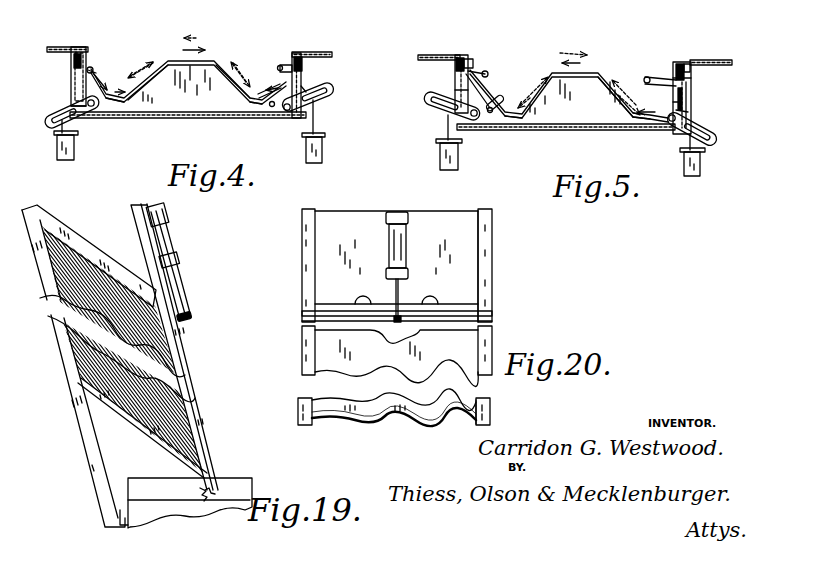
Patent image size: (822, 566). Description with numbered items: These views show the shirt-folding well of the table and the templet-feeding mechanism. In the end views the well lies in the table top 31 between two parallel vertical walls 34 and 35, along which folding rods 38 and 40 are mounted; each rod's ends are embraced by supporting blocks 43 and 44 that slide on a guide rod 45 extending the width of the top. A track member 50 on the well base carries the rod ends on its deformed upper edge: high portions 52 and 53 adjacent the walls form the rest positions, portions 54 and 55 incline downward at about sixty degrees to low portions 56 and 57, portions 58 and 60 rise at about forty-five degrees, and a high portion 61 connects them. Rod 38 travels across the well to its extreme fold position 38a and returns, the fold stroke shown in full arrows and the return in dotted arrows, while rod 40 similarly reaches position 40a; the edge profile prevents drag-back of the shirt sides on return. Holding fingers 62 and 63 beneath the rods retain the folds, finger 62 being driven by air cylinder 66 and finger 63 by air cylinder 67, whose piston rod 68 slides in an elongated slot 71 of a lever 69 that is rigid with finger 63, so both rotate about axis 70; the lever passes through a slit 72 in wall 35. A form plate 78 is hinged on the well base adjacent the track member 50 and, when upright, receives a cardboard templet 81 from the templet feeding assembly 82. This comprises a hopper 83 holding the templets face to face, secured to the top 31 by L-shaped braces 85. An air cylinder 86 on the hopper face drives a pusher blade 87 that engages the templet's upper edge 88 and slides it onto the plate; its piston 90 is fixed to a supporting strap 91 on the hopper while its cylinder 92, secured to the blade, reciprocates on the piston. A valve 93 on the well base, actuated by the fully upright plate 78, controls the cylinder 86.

In FIG. 4, the top 31 is at (52, 47).
In FIG. 5, the top 31 is at (732, 61).
In FIG. 19, the top 31 is at (245, 478).
In FIG. 4, the well wall 34 is at (70, 80).
In FIG. 5, the well wall 34 is at (445, 112).
In FIG. 4, the well wall 35 is at (302, 108).
In FIG. 5, the well wall 35 is at (690, 78).
In FIG. 4, the folding rod 38 is at (78, 48).
In FIG. 5, the folding rod 38 is at (456, 70).
In FIG. 4, the extreme forward fold position 38a is at (272, 108).
In FIG. 4, the folding rod 40 is at (300, 56).
In FIG. 5, the folding rod 40 is at (686, 64).
In FIG. 5, the extreme forward fold position 40a is at (490, 113).
In FIG. 4, the supporting block 43 is at (83, 47).
In FIG. 5, the supporting block 43 is at (462, 56).
In FIG. 5, the supporting block 44 is at (680, 60).
In FIG. 4, the guide rod 45 is at (92, 66).
In FIG. 5, the guide rod 45 is at (470, 68).
In FIG. 4, the track member 50 is at (171, 72).
In FIG. 5, the track member 50 is at (575, 113).
In FIG. 4, the edge portion 52 is at (88, 58).
In FIG. 5, the edge portion 52 is at (455, 92).
In FIG. 5, the edge portion 53 is at (690, 92).
In FIG. 4, the edge portion 54 is at (130, 66).
In FIG. 5, the edge portion 54 is at (483, 76).
In FIG. 4, the edge portion 55 is at (268, 85).
In FIG. 5, the edge portion 55 is at (650, 78).
In FIG. 4, the edge portion 56 is at (122, 104).
In FIG. 5, the edge portion 56 is at (505, 118).
In FIG. 4, the edge portion 57 is at (262, 108).
In FIG. 5, the edge portion 57 is at (628, 120).
In FIG. 4, the edge portion 58 is at (149, 78).
In FIG. 5, the edge portion 58 is at (536, 80).
In FIG. 4, the edge portion 60 is at (235, 92).
In FIG. 5, the edge portion 60 is at (607, 76).
In FIG. 4, the edge portion 61 is at (186, 40).
In FIG. 5, the edge portion 61 is at (600, 72).
In FIG. 4, the holding finger 62 is at (60, 108).
In FIG. 5, the holding finger 62 is at (500, 96).
In FIG. 4, the holding finger 63 is at (306, 88).
In FIG. 5, the holding finger 63 is at (688, 108).
In FIG. 4, the air cylinder 66 is at (78, 152).
In FIG. 5, the air cylinder 66 is at (438, 162).
In FIG. 4, the air cylinder 67 is at (323, 150).
In FIG. 5, the air cylinder 67 is at (700, 162).
In FIG. 4, the piston rod 68 is at (315, 126).
In FIG. 5, the piston rod 68 is at (684, 150).
In FIG. 4, the lever 69 is at (336, 93).
In FIG. 5, the lever 69 is at (713, 140).
In FIG. 4, the axis 70 is at (294, 115).
In FIG. 5, the axis 70 is at (666, 125).
In FIG. 4, the elongated slot 71 is at (337, 88).
In FIG. 5, the elongated slot 71 is at (702, 128).
In FIG. 5, the slit 72 is at (690, 102).
In FIG. 19, the form plate 78 is at (195, 367).
In FIG. 20, the form plate 78 is at (326, 352).
In FIG. 19, the cardboard templet 81 is at (167, 420).
In FIG. 20, the cardboard templet 81 is at (475, 311).
In FIG. 20, the templet feeding assembly 82 is at (498, 247).
In FIG. 19, the hopper 83 is at (84, 245).
In FIG. 20, the hopper 83 is at (492, 268).
In FIG. 19, the L-shaped brace 85 is at (78, 430).
In FIG. 20, the air cylinder 86 is at (410, 250).
In FIG. 19, the pusher blade 87 is at (218, 350).
In FIG. 20, the pusher blade 87 is at (330, 263).
In FIG. 19, the upper edge 88 is at (175, 300).
In FIG. 20, the upper edge 88 is at (432, 304).
In FIG. 19, the piston 90 is at (170, 287).
In FIG. 20, the piston 90 is at (400, 290).
In FIG. 19, the supporting strap 91 is at (186, 317).
In FIG. 20, the supporting strap 91 is at (313, 318).
In FIG. 19, the cylinder 92 is at (168, 212).
In FIG. 20, the cylinder 92 is at (388, 220).
In FIG. 19, the valve 93 is at (200, 492).